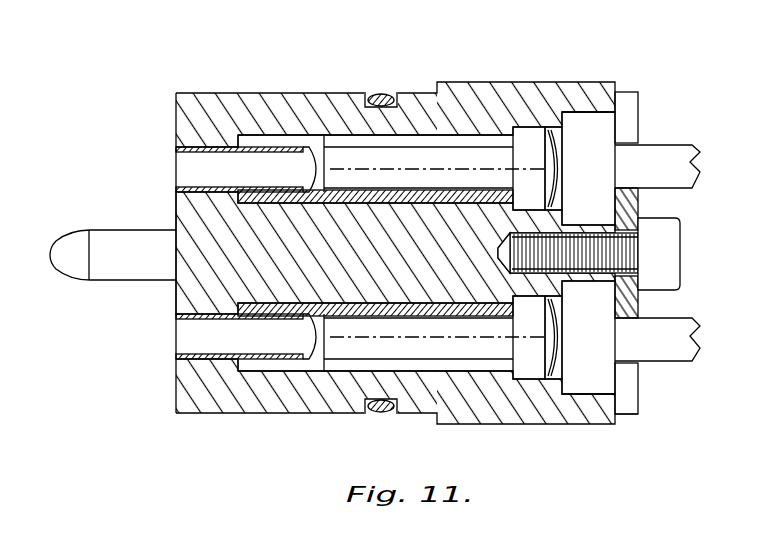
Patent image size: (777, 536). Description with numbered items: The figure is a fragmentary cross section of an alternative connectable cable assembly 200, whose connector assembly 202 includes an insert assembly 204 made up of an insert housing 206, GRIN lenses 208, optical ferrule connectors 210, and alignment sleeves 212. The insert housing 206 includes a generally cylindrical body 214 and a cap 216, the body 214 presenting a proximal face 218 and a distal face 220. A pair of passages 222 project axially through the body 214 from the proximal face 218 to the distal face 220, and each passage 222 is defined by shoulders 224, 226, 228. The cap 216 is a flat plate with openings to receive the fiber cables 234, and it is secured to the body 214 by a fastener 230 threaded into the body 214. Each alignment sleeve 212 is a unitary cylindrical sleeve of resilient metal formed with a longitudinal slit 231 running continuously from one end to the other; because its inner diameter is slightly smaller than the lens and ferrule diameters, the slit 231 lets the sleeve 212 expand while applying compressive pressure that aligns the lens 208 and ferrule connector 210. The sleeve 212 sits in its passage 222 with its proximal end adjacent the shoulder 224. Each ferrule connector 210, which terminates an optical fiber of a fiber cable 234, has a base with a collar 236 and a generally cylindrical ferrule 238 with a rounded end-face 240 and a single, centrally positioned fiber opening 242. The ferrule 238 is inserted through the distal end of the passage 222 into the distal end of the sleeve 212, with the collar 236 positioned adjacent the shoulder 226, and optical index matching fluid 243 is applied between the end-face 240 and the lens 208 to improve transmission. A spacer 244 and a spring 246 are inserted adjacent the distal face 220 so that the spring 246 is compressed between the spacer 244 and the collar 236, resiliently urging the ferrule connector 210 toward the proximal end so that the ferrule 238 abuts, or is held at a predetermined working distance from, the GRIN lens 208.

The connectable cable assembly 200 is at (393, 247).
The connector assembly 202 is at (393, 247).
The insert assembly 204 is at (390, 221).
The insert housing 206 is at (258, 100).
The GRIN lens 208 is at (202, 160).
The optical ferrule connector 210 is at (538, 130).
The alignment sleeve 212 is at (395, 142).
The body 214 is at (197, 200).
The cap 216 is at (632, 110).
The proximal face 218 is at (175, 295).
The distal face 220 is at (617, 400).
The passage 222 is at (335, 138).
The shoulder 224 is at (247, 133).
The shoulder 226 is at (525, 127).
The shoulder 228 is at (562, 118).
The fastener 230 is at (665, 244).
The longitudinal slit 231 is at (492, 140).
The fiber cable 234 is at (672, 166).
The collar 236 is at (548, 133).
The ferrule 238 is at (410, 155).
The rounded end-face 240 is at (305, 178).
The fiber opening 242 is at (372, 172).
The optical index matching fluid 243 is at (307, 138).
The spacer 244 is at (607, 160).
The spring 246 is at (557, 187).